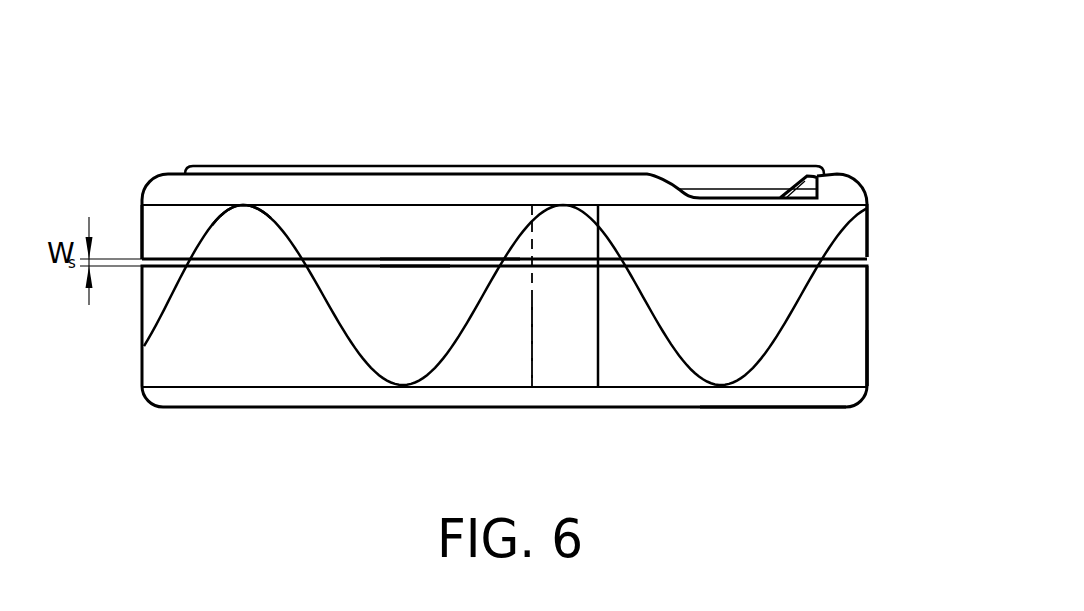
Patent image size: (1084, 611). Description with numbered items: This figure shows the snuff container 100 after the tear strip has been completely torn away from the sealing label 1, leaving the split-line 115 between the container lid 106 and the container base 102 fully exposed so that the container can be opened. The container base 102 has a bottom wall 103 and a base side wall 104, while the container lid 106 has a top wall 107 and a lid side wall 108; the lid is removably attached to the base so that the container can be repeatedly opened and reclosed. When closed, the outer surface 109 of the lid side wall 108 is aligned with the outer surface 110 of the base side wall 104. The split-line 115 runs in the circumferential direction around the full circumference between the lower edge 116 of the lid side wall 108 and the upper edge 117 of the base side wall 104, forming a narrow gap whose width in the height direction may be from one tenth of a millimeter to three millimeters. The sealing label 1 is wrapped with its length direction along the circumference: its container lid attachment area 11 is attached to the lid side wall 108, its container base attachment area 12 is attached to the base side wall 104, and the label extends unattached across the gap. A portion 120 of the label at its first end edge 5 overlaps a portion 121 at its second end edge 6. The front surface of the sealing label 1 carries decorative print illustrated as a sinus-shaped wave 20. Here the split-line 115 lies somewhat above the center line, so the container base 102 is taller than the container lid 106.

The snuff container 100 is at (744, 91).
The top wall 107 is at (622, 160).
The lid side wall 108 is at (142, 230).
The outer surface of the lid side wall 109 is at (874, 224).
The outer surface of the base side wall 110 is at (876, 310).
The base side wall 104 is at (868, 362).
The bottom wall 103 is at (769, 418).
The sinus-shaped wave 20 is at (335, 308).
The container lid attachment area 11 is at (246, 196).
The container lid 106 is at (326, 225).
The lower edge of the lid side wall 116 is at (413, 260).
The split-line 115 is at (478, 264).
The portion of the sealing label at the second end edge 121 is at (574, 240).
The second end edge 6 is at (532, 335).
The first end edge 5 is at (598, 335).
The portion of the sealing label at the first end edge 120 is at (575, 347).
The container base 102 is at (512, 340).
The upper edge of the base side wall 117 is at (418, 267).
The container base attachment area 12 is at (188, 343).
The sealing label 1 is at (245, 343).